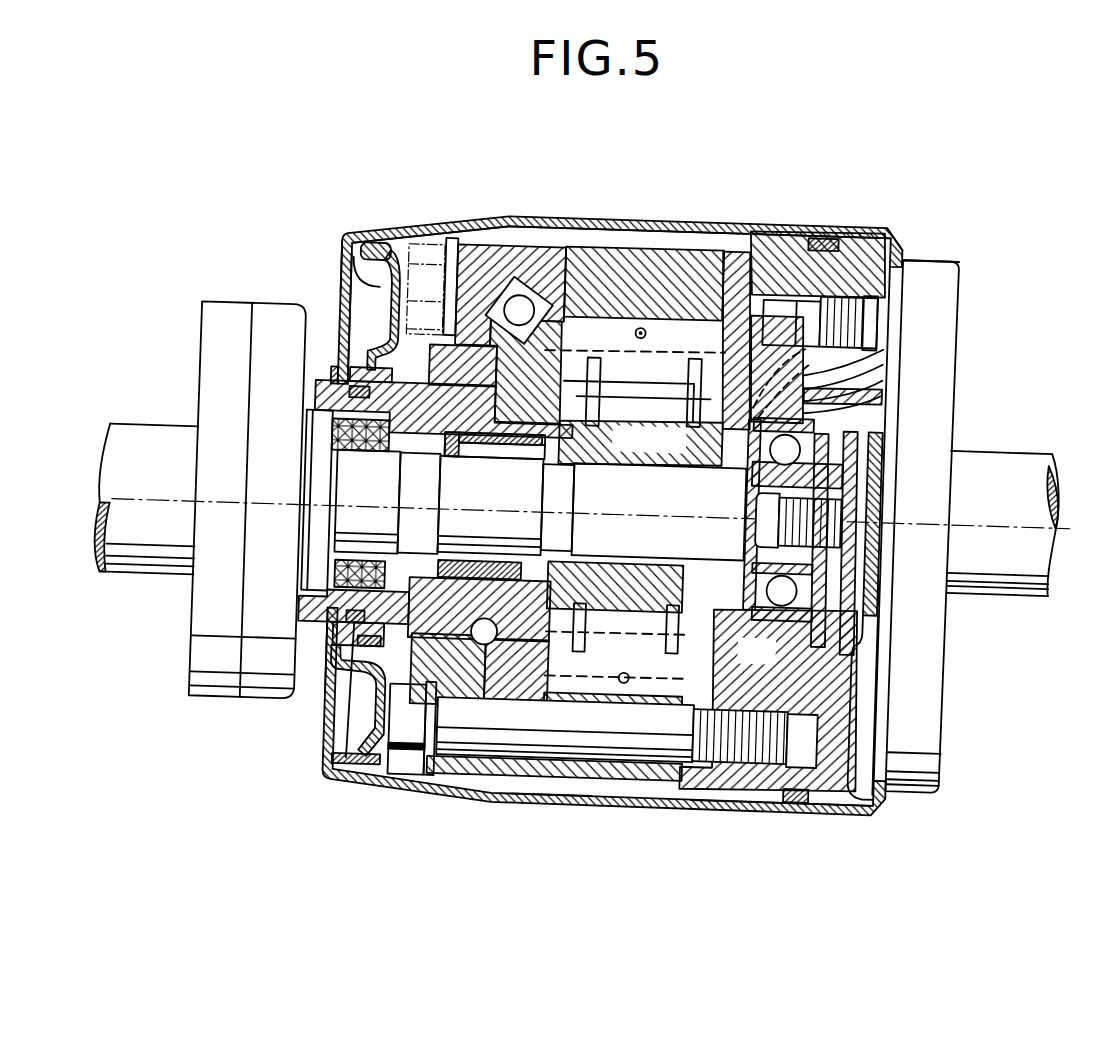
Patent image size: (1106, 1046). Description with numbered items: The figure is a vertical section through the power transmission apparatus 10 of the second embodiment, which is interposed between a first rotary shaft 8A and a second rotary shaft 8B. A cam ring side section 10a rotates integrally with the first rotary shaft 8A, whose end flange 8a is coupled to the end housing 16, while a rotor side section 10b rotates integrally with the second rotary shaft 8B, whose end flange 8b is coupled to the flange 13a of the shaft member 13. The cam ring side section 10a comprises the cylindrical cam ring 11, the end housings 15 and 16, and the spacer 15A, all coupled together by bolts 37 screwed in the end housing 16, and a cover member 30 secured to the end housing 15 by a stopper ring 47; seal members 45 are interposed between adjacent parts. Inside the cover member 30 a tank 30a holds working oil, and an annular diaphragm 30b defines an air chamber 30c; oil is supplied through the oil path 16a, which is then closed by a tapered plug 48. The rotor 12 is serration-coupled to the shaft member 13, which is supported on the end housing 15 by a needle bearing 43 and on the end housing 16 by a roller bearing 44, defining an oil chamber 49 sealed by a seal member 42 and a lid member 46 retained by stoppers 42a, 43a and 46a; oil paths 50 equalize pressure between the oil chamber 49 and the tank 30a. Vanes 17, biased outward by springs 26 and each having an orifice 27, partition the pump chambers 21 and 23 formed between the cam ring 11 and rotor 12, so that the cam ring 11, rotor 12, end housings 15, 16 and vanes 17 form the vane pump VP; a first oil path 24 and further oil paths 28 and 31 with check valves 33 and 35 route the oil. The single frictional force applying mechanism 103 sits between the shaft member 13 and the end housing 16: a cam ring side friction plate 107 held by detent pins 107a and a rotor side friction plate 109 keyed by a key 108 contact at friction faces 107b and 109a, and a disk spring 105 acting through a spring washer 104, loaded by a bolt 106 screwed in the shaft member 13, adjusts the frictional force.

The end flange 8a is at (915, 783).
The end flange 8b is at (204, 335).
The first rotary shaft 8A is at (1014, 582).
The second rotary shaft 8B is at (137, 439).
The power transmission apparatus 10 is at (306, 724).
The cam ring side section 10a is at (869, 214).
The rotor side section 10b is at (223, 293).
The cam ring 11 is at (663, 777).
The rotor 12 is at (692, 580).
The shaft member 13 is at (607, 530).
The flange 13a is at (271, 329).
The end housing 15 is at (526, 780).
The spacer 15A is at (466, 780).
The end housing 16 is at (771, 790).
The oil path 16a is at (774, 237).
The vane 17 is at (711, 316).
The pump chamber 21 is at (619, 373).
The pump chamber 23 is at (620, 657).
The first oil path 24 is at (385, 240).
The spring 26 is at (611, 432).
The orifice 27 is at (666, 298).
The oil path 28 is at (577, 305).
The cover member 30 is at (646, 213).
The tank 30a is at (529, 234).
The annular diaphragm 30b is at (361, 295).
The air chamber 30c is at (383, 333).
The oil path 31 is at (914, 249).
The check valve 33 is at (494, 303).
The check valve 35 is at (861, 305).
The bolt 37 is at (437, 245).
The seal member 42 is at (366, 567).
The stopper 42a is at (306, 615).
The bearing 43 is at (488, 565).
The stopper 43a is at (448, 461).
The bearing 44 is at (776, 475).
The seal member 45 is at (809, 798).
The lid member 46 is at (867, 560).
The stopper 46a is at (894, 638).
The stopper ring 47 is at (330, 376).
The tapered plug 48 is at (864, 265).
The oil chamber 49 is at (832, 400).
The oil path 50 is at (735, 253).
The frictional force applying mechanism 103 is at (866, 580).
The spring washer 104 is at (870, 406).
The disk spring 105 is at (855, 475).
The bolt 106 is at (862, 510).
The cam ring side friction plate 107 is at (809, 357).
The detent pin 107a is at (826, 338).
The friction face 107b is at (605, 424).
The key 108 is at (806, 497).
The rotor side friction plate 109 is at (832, 386).
The friction face 109a is at (837, 375).
The vane pump VP is at (556, 787).